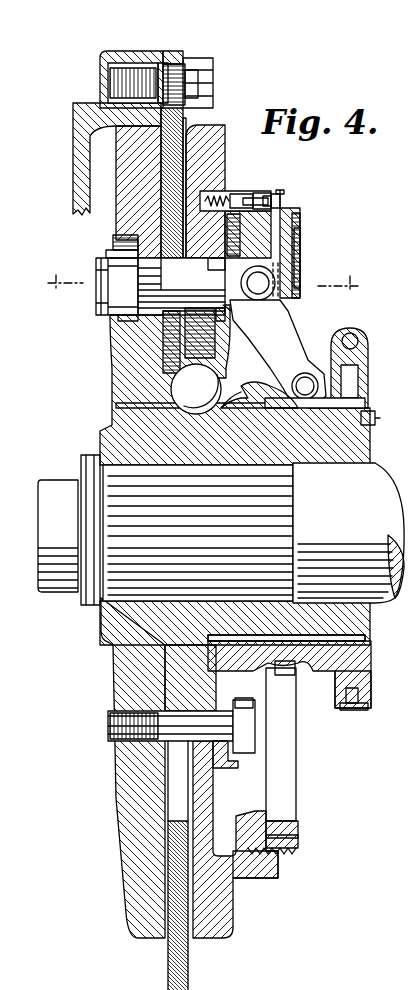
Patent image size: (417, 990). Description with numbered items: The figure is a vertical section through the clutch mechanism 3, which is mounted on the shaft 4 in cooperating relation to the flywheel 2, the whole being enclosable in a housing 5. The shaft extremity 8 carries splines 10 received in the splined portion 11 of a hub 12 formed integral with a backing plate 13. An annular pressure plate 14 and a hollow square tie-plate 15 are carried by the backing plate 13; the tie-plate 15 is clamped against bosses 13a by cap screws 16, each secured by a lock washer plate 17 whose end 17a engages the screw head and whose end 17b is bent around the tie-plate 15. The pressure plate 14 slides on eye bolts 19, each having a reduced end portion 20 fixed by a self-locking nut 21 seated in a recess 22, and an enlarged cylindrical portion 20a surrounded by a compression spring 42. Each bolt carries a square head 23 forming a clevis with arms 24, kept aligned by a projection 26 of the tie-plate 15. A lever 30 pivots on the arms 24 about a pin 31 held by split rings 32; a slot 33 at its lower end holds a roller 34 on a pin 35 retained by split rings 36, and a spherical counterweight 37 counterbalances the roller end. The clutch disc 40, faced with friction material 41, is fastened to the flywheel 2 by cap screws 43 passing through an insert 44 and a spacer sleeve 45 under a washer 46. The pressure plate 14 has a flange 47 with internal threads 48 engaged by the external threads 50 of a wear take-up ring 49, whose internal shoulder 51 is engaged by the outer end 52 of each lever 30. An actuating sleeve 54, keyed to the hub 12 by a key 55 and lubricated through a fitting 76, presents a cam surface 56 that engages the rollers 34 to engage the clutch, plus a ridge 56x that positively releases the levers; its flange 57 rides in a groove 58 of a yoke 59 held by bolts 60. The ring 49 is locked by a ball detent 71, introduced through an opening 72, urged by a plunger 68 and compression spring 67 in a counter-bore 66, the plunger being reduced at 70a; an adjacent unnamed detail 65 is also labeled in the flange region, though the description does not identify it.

The flywheel 2 is at (72, 148).
The clutch mechanism 3 is at (108, 855).
The shaft 4 is at (372, 463).
The housing 5 is at (344, 288).
The shaft extremity 8 is at (66, 580).
The splines 10 is at (282, 490).
The splined portion 11 is at (96, 625).
The hub 12 is at (366, 610).
The backing plate 13 is at (115, 377).
The bosses 13a is at (168, 733).
The annular pressure plate 14 is at (182, 140).
The hollow square tie-plate 15 is at (212, 315).
The cap screws 16 is at (250, 735).
The lock washer plate 17 is at (230, 753).
The plate end 17a is at (229, 697).
The plate end 17b is at (222, 763).
The eye bolts 19 is at (110, 192).
The reduced end portion 20 is at (90, 285).
The enlarged cylindrical portion 20a is at (181, 286).
The self-locking nut 21 is at (110, 313).
The recesses 22 is at (104, 236).
The bolt head 23 is at (252, 300).
The arms 24 is at (290, 262).
The projection 26 is at (268, 205).
The lever 30 is at (292, 352).
The pin 31 is at (266, 272).
The split rings 32 is at (262, 282).
The slot 33 is at (300, 365).
The roller 34 is at (310, 380).
The pin 35 is at (305, 372).
The split rings 36 is at (360, 395).
The counterweight 37 is at (196, 389).
The clutch disc 40 is at (170, 48).
The friction facing material 41 is at (155, 148).
The compression spring 42 is at (158, 330).
The cap screws 43 is at (207, 72).
The insert 44 is at (162, 42).
The spacer sleeve 45 is at (152, 48).
The washer 46 is at (186, 50).
The flange 47 is at (250, 186).
The internal threads 48 is at (291, 834).
The wear take-up ring 49 is at (289, 712).
The external threads 50 is at (272, 846).
The annular internal shoulder 51 is at (289, 230).
The lever outer end 52 is at (290, 245).
The actuating sleeve 54 is at (365, 652).
The key 55 is at (360, 630).
The cam surface 56 is at (262, 392).
The ridge 56x is at (226, 395).
The flange 57 is at (365, 676).
The groove 58 is at (344, 697).
The yoke 59 is at (364, 700).
The bolts 60 is at (346, 334).
The thread 65 is at (272, 215).
The counter-bore 66 is at (212, 186).
The compression spring 67 is at (250, 186).
The plunger 68 is at (274, 185).
The reduced portion 70a is at (250, 190).
The ball detent 71 is at (270, 200).
The opening 72 is at (262, 190).
The fitting 76 is at (372, 410).